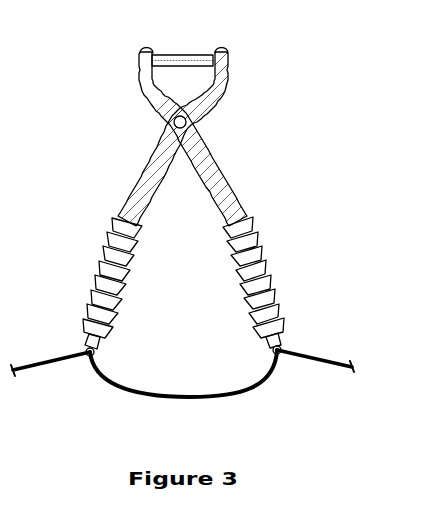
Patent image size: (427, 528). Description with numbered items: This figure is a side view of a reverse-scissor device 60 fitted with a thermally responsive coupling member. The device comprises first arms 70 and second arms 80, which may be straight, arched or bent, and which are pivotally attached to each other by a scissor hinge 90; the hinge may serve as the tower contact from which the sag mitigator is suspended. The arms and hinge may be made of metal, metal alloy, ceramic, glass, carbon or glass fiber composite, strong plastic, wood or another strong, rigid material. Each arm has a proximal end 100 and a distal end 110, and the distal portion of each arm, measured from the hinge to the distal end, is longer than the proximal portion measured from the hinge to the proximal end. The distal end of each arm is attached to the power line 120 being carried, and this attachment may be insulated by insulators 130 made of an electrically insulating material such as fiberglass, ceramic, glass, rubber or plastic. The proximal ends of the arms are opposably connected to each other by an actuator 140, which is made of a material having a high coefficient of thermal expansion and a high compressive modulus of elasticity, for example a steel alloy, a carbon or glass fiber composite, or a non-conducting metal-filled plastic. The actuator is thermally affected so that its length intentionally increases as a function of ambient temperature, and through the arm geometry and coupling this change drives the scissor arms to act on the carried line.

The reverse-scissor device 60 is at (111, 112).
The first arms 70 is at (134, 170).
The second arms 80 is at (230, 167).
The scissor hinge 90 is at (187, 121).
The proximal end 100 is at (87, 350).
The distal end 110 is at (139, 55).
The power line 120 is at (326, 352).
The insulators 130 is at (105, 247).
The actuator 140 is at (187, 54).